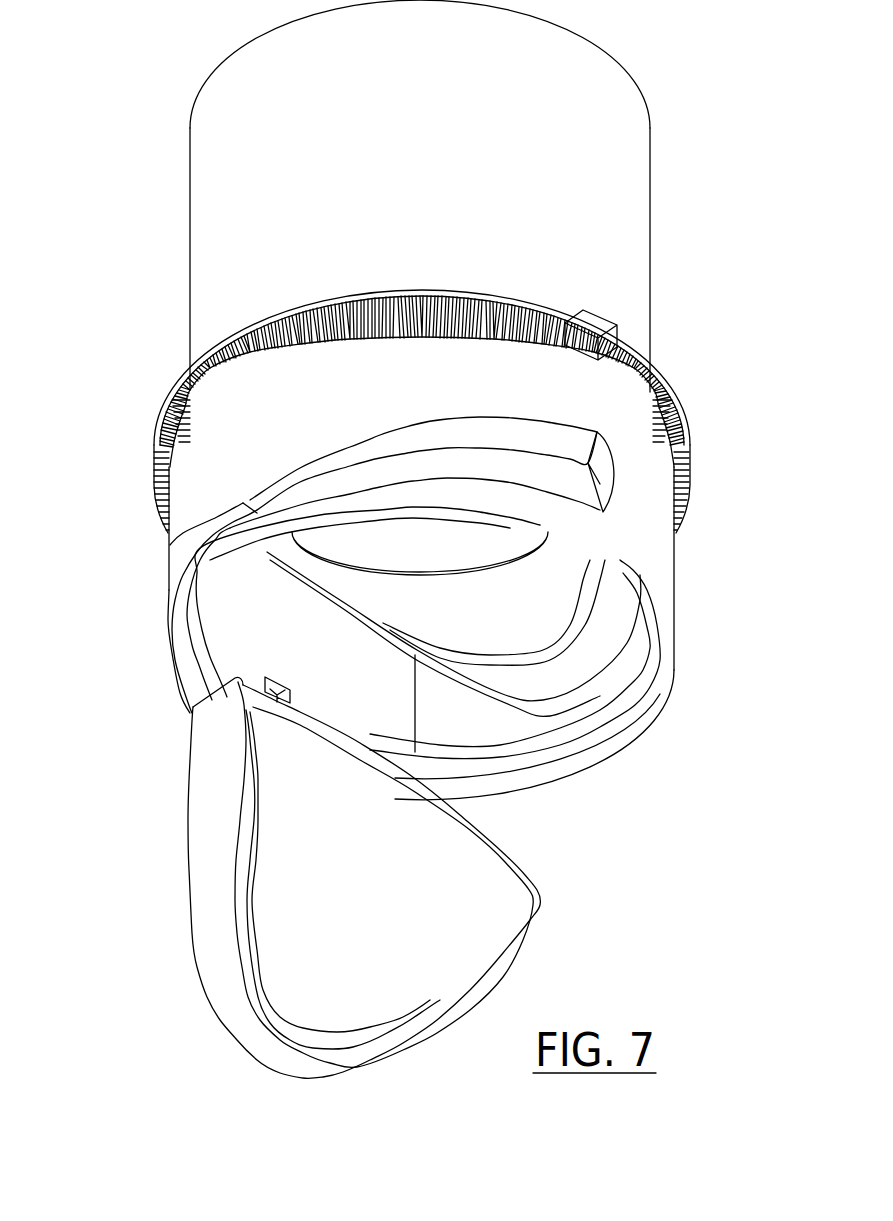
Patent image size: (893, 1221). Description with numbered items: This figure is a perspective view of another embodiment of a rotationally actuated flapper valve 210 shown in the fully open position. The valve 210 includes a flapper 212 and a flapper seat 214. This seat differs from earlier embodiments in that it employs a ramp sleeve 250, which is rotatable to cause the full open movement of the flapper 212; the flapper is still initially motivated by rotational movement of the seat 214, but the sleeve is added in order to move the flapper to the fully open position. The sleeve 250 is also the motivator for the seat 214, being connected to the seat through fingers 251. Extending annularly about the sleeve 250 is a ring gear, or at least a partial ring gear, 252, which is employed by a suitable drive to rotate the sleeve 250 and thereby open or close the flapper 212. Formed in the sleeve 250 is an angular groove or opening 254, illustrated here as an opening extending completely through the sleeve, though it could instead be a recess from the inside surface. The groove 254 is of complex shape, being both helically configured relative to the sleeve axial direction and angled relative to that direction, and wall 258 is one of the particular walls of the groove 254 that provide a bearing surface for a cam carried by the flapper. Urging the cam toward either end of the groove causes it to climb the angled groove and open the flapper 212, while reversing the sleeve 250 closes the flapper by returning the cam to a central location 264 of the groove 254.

The valve 210 is at (685, 75).
The flapper 212 is at (222, 802).
The flapper seat 214 is at (542, 677).
The ramp sleeve 250 is at (225, 450).
The fingers 251 is at (600, 333).
The ring gear 252 is at (190, 391).
The angular groove or opening 254 is at (603, 482).
The wall of the groove 258 is at (547, 437).
The central location of the groove 264 is at (188, 533).